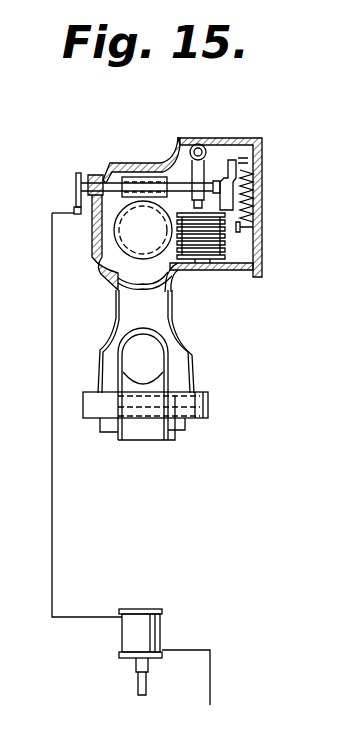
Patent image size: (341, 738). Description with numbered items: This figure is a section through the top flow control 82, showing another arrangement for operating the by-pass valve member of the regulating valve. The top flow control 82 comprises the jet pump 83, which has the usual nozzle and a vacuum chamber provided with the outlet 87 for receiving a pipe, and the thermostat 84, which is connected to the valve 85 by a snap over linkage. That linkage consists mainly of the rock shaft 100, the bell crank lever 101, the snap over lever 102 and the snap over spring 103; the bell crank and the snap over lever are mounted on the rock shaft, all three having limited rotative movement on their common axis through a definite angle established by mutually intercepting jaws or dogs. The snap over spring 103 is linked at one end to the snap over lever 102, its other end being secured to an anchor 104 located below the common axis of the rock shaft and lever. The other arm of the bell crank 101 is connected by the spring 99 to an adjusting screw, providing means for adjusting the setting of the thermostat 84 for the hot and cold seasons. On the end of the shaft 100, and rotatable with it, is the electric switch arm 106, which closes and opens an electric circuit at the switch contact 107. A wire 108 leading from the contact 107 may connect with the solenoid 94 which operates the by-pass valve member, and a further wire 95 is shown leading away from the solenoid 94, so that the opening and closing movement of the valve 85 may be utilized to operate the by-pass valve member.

The top flow control 82 is at (253, 136).
The jet pump 83 is at (194, 350).
The thermostat 84 is at (228, 270).
The valve 85 is at (138, 232).
The outlet 87 is at (150, 438).
The solenoid 94 is at (162, 630).
The wire 95 is at (210, 687).
The spring 99 is at (197, 144).
The rock shaft 100 is at (168, 163).
The bell crank lever 101 is at (186, 145).
The snap over lever 102 is at (232, 144).
The snap over spring 103 is at (256, 198).
The anchor 104 is at (262, 240).
The electric switch arm 106 is at (76, 180).
The switch contact 107 is at (74, 210).
The wire 108 is at (52, 387).